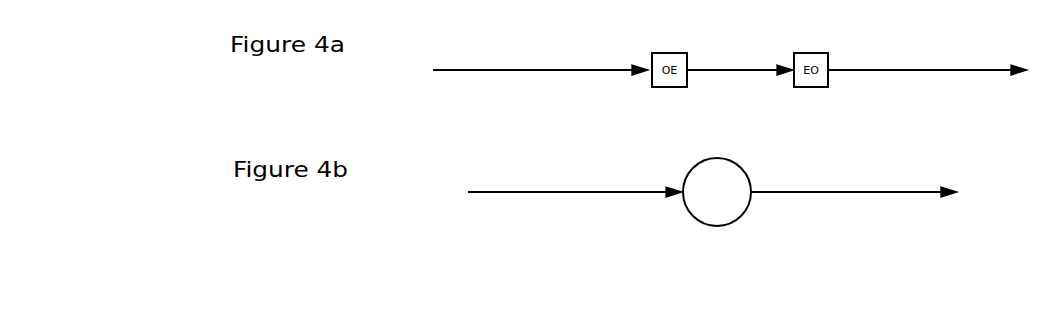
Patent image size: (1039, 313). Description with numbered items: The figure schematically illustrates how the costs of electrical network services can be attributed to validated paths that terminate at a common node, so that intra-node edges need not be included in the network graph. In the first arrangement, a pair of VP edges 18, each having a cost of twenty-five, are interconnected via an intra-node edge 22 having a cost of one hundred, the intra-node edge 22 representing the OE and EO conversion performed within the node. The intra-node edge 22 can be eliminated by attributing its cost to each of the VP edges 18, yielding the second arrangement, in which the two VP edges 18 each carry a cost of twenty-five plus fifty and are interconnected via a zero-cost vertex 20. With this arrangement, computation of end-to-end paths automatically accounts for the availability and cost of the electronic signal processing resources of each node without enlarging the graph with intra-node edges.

In FIG. 4a, the VP edge 18 is at (528, 72).
In FIG. 4b, the VP edge 18 is at (562, 194).
In FIG. 4a, the intra-node edge 22 is at (754, 74).
In FIG. 4b, the vertex 20 is at (742, 169).